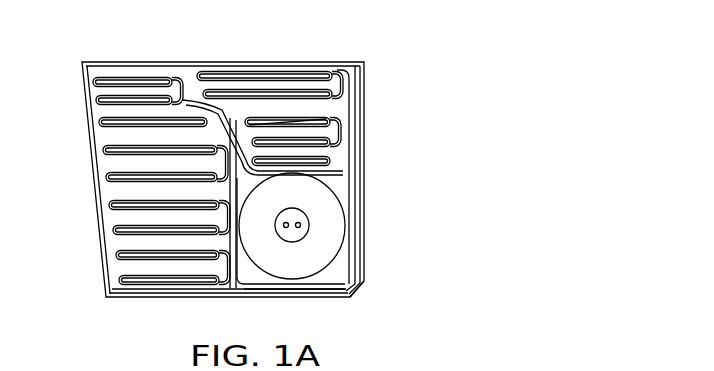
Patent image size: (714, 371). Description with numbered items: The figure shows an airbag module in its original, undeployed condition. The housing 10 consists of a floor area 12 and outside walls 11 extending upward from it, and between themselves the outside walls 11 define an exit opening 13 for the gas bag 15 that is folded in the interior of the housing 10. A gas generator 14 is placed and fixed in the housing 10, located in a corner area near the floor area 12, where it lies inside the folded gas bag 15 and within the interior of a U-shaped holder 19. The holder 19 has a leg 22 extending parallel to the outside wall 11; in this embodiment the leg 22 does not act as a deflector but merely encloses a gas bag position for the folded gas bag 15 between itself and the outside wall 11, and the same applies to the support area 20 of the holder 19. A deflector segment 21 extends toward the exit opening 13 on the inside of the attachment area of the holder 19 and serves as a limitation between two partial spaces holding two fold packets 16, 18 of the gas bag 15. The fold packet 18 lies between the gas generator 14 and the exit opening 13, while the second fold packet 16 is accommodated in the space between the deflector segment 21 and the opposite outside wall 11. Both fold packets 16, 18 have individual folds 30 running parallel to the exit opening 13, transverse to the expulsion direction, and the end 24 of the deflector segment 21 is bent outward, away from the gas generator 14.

The housing 10 is at (106, 297).
The outside walls 11 is at (100, 215).
The floor area 12 is at (180, 298).
The exit opening 13 is at (157, 62).
The gas generator 14 is at (332, 222).
The gas bag 15 is at (138, 90).
The fold packet 16 is at (132, 123).
The fold packet 18 is at (287, 113).
The holder 19 is at (257, 278).
The support area 20 is at (313, 289).
The deflector segment 21 is at (200, 180).
The leg 22 is at (355, 182).
The end of the deflector segment 24 is at (230, 140).
The individual folds 30 is at (127, 246).